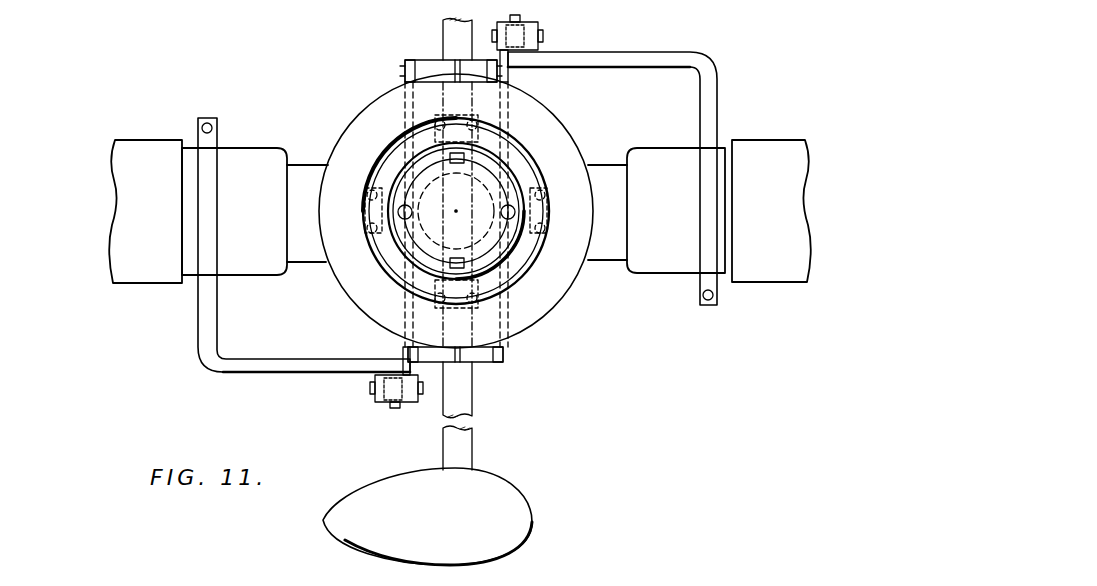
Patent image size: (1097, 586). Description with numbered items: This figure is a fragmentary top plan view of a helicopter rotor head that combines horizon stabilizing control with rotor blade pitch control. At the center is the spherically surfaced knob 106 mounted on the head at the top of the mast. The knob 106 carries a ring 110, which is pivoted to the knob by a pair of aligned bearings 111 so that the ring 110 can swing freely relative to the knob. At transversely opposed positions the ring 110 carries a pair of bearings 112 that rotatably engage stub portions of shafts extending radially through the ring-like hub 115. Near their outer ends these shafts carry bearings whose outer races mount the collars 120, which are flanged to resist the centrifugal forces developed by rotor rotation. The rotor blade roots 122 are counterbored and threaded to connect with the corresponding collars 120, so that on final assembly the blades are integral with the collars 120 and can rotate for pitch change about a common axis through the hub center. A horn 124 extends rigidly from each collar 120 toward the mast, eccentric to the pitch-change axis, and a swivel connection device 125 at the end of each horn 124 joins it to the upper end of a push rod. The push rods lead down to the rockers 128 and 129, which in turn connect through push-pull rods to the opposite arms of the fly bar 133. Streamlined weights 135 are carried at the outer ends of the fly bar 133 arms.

The spherically surfaced knob 106 is at (500, 170).
The ring 110 is at (513, 260).
The bearings 111 is at (459, 262).
The bearings 112 is at (383, 197).
The ring-like hub 115 is at (318, 252).
The collar 120 is at (264, 264).
The rotor blade root 122 is at (157, 270).
The horn 124 is at (642, 58).
The swivel connection device 125 is at (540, 40).
The rocker 128 is at (410, 344).
The rocker 129 is at (503, 79).
The fly bar 133 is at (462, 408).
The streamlined weight 135 is at (495, 490).